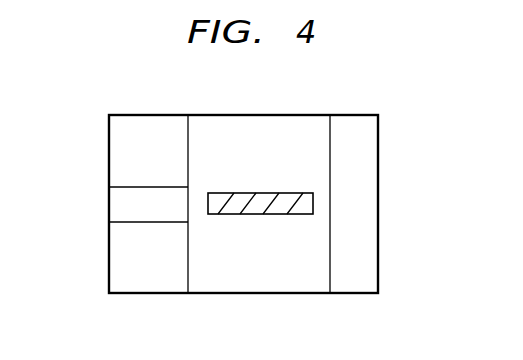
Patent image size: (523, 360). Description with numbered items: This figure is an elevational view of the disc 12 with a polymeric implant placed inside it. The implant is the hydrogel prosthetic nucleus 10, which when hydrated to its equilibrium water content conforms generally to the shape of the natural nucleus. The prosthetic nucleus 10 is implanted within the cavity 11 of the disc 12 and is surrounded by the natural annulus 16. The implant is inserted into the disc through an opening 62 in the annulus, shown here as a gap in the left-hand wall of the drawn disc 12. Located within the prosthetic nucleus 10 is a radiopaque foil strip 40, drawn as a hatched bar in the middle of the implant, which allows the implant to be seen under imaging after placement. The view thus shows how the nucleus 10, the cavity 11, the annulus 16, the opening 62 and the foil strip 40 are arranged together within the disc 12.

The natural annulus 16 is at (351, 108).
The hydrogel prosthetic nucleus 10 is at (245, 137).
The disc 12 is at (120, 145).
The opening 62 is at (137, 208).
The cavity 11 is at (210, 275).
The radiopaque foil strip 40 is at (295, 214).